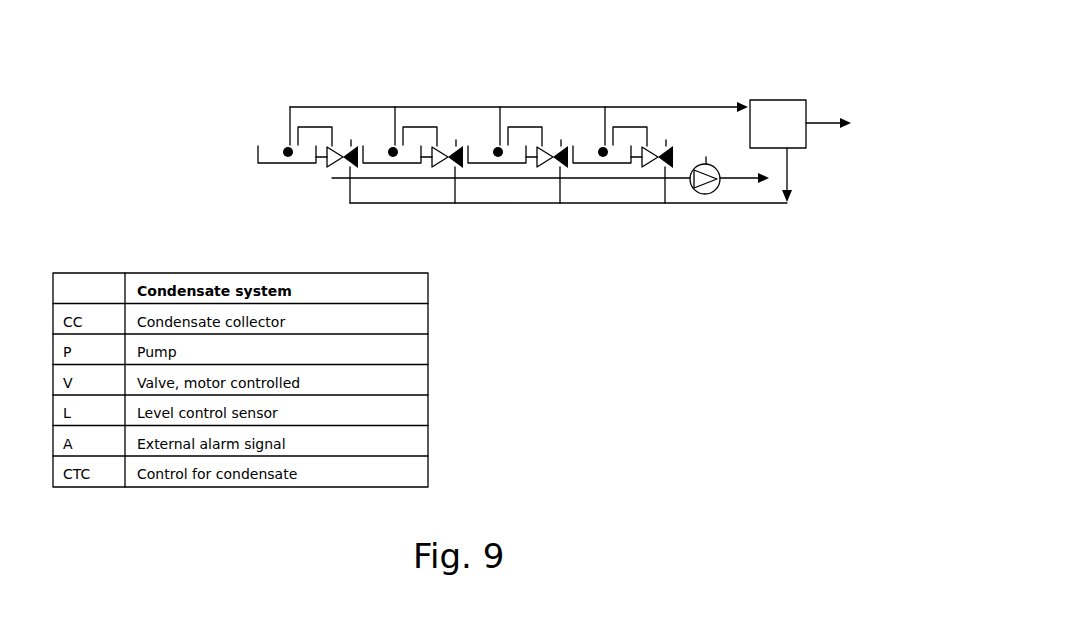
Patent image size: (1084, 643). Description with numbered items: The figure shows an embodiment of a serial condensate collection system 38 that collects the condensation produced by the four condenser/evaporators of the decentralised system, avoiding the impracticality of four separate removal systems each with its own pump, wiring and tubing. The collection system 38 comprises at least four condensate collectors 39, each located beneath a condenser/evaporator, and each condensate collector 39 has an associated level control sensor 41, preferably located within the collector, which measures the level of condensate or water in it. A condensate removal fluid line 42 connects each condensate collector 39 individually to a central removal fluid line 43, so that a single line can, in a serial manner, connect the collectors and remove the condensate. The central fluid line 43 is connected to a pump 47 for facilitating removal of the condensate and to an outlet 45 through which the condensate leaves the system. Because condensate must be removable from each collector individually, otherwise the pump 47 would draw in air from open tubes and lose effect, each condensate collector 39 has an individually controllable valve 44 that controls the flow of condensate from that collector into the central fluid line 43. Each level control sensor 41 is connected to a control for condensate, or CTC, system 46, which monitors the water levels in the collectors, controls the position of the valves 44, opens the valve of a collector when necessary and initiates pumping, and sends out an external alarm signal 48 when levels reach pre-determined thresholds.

The serial condensate collection system 38 is at (538, 156).
The condensate collector 39 is at (254, 96).
The level control sensor 41 is at (273, 156).
The condensate removal fluid line 42 is at (333, 125).
The central removal fluid line 43 is at (332, 180).
The individually controllable valve 44 is at (458, 112).
The outlet 45 is at (747, 180).
The control for condensate (CTC) system 46 is at (793, 103).
The pump 47 is at (707, 192).
The external alarm signal 48 is at (843, 143).